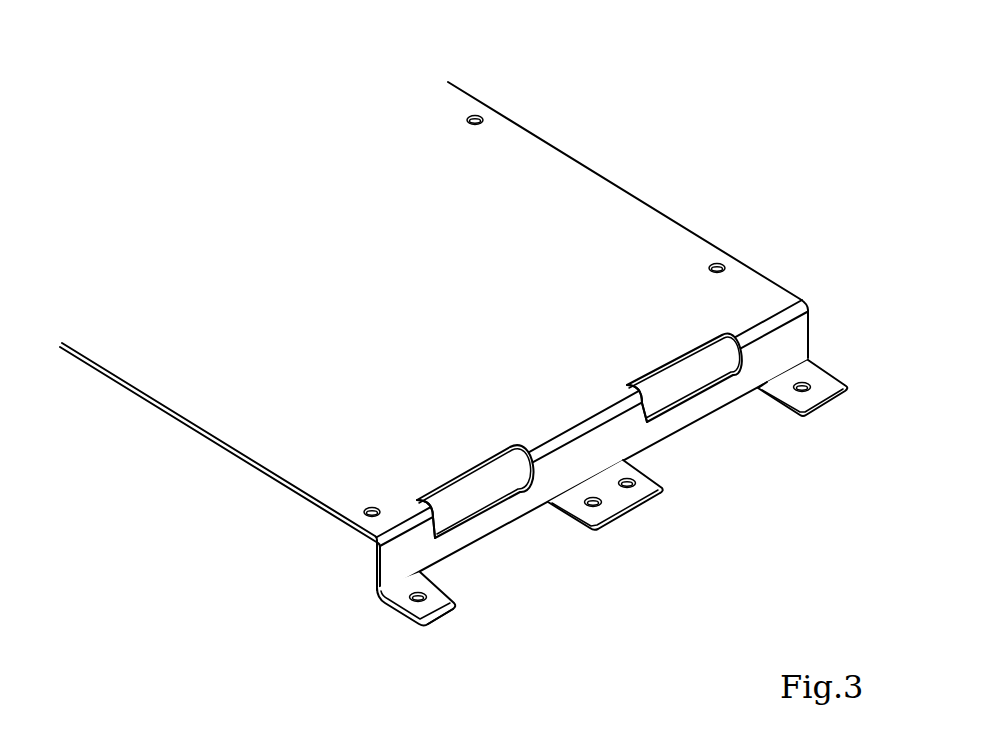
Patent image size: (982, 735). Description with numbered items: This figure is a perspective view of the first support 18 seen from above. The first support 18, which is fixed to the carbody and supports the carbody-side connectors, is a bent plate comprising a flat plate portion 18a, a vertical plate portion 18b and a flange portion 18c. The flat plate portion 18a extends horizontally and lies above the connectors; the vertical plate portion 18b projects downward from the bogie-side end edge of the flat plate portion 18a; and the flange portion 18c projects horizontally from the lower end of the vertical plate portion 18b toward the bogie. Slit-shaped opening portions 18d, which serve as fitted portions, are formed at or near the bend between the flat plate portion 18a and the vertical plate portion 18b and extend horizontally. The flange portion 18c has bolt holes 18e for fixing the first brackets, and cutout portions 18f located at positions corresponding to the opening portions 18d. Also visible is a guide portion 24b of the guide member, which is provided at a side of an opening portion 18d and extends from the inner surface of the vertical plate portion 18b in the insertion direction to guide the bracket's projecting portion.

The first support 18 is at (467, 368).
The flat plate portion 18a is at (622, 218).
The vertical plate portion 18b is at (398, 555).
The flange portion 18c is at (440, 618).
The opening portion 18d is at (467, 505).
The bolt hole 18e is at (397, 611).
The cutout portion 18f is at (517, 558).
The guide portion 24b is at (512, 463).